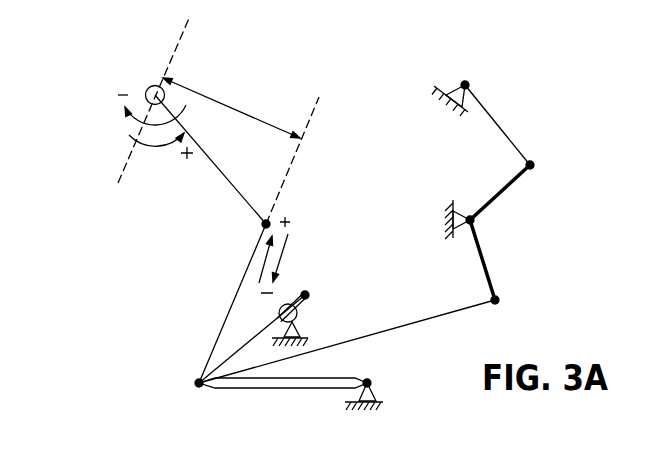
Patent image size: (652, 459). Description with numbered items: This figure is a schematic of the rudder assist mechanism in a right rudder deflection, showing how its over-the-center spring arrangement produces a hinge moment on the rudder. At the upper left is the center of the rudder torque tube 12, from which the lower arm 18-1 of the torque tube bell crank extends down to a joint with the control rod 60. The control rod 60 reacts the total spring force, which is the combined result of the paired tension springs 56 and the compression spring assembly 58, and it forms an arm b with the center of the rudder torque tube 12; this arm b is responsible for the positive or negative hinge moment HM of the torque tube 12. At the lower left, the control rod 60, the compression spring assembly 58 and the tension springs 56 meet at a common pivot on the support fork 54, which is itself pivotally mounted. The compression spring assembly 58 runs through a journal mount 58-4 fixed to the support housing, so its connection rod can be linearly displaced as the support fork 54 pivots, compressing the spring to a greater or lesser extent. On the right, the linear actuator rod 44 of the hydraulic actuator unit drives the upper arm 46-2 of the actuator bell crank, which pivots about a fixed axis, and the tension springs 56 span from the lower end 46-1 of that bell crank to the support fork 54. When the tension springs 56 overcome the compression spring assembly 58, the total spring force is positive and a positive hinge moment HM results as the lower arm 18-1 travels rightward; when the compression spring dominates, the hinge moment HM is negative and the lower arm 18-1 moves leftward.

The rudder torque tube 12 is at (153, 85).
The hinge moment HM is at (121, 130).
The arm b is at (231, 108).
The lower arm of torque tube bell crank 18-1 is at (227, 190).
The control rod 60 is at (238, 295).
The compression spring assembly 58 is at (228, 342).
The journal mount 58-4 is at (282, 302).
The tension springs 56 is at (365, 334).
The support fork 54 is at (253, 386).
The actuator rod 44 is at (503, 130).
The upper arm of actuator bell crank 46-2 is at (505, 190).
The lower end of actuator bell crank 46-1 is at (482, 248).